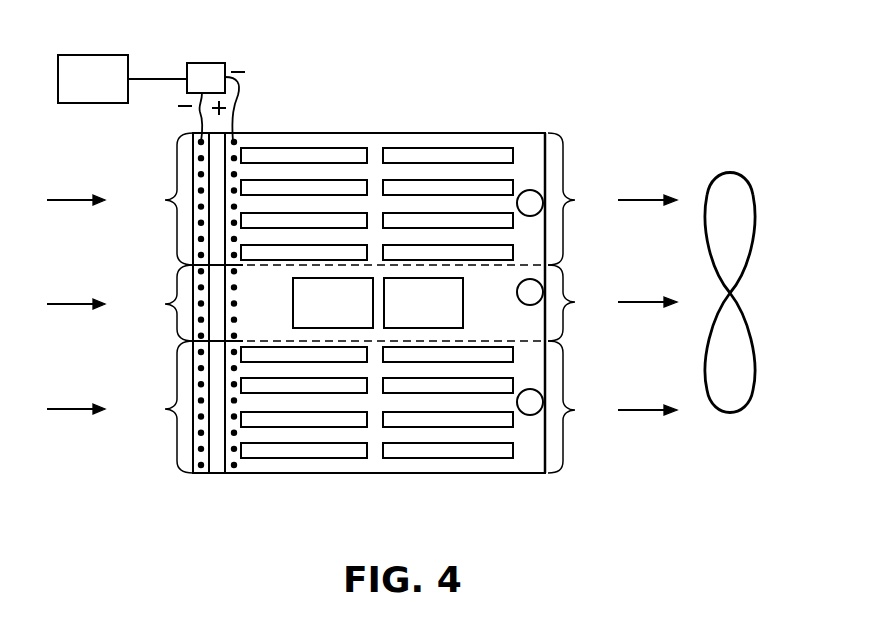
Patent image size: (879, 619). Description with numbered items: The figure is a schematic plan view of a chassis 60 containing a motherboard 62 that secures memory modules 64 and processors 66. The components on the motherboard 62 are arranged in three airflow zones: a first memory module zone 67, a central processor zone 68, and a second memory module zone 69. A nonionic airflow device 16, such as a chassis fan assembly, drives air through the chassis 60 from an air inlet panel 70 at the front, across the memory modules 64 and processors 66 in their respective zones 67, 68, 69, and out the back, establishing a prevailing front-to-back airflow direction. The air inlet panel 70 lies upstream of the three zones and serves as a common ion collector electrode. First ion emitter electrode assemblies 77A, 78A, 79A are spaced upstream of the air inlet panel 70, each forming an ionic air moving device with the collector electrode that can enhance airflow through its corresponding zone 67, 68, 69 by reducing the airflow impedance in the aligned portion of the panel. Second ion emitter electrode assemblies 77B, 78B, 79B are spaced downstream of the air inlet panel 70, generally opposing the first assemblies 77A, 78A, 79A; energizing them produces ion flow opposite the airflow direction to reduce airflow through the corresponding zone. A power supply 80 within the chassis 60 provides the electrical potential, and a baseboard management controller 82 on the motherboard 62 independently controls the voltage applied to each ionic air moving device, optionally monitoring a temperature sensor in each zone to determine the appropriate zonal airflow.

The baseboard management controller 82 is at (90, 55).
The power supply 80 is at (207, 63).
The chassis 60 is at (400, 133).
The motherboard 62 is at (533, 155).
The air inlet panel 70 is at (217, 475).
The memory modules 64 is at (345, 188).
The processors 66 is at (373, 311).
The first ion emitter electrode assembly 77A is at (120, 199).
The first ion emitter electrode assembly 78A is at (120, 303).
The first ion emitter electrode assembly 79A is at (120, 407).
The second ion emitter electrode assembly 77B is at (247, 265).
The second ion emitter electrode assembly 78B is at (247, 341).
The second ion emitter electrode assembly 79B is at (245, 472).
The first memory module zone 67 is at (597, 199).
The central processor zone 68 is at (597, 303).
The second memory module zone 69 is at (597, 407).
The nonionic airflow device 16 is at (753, 250).